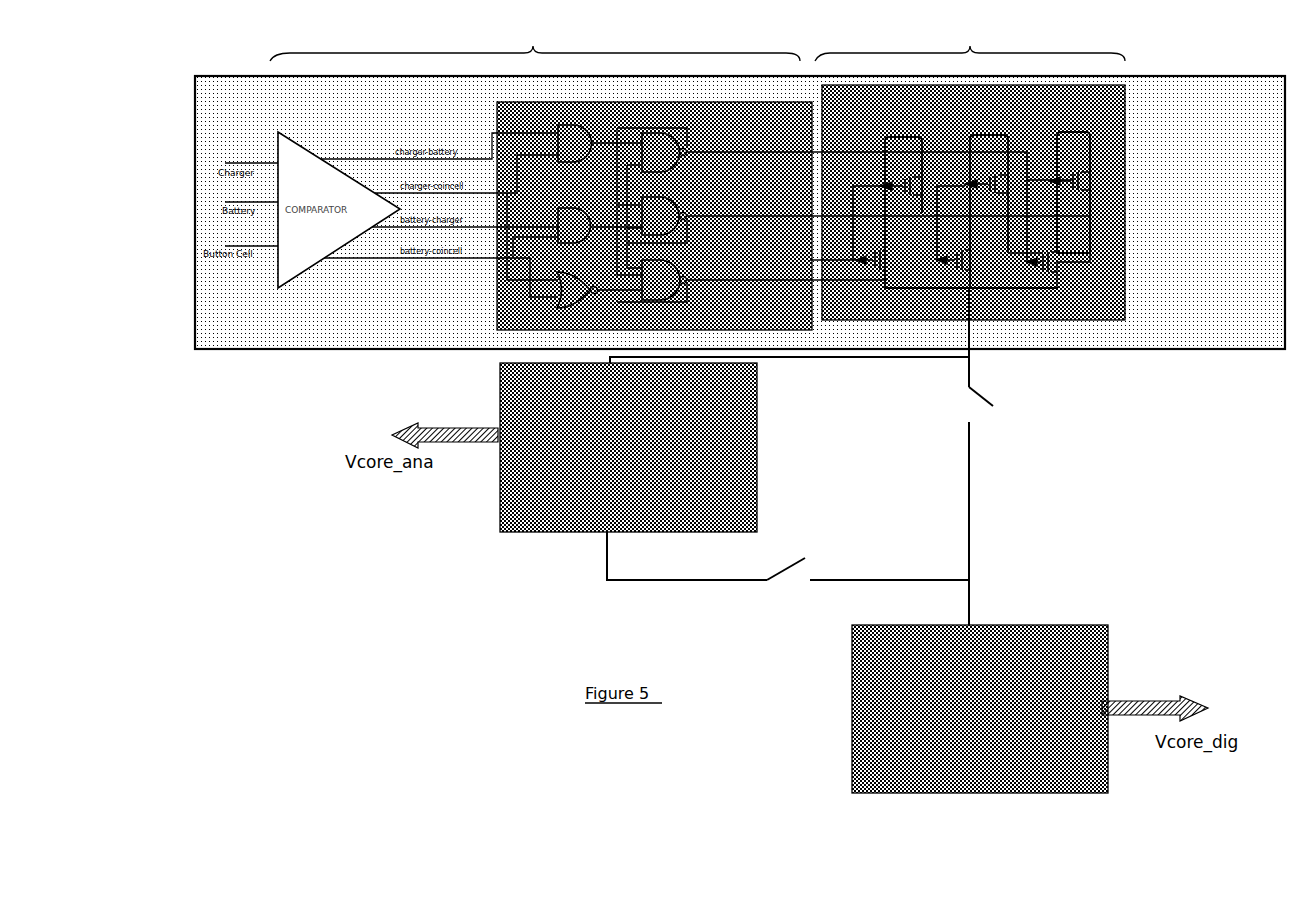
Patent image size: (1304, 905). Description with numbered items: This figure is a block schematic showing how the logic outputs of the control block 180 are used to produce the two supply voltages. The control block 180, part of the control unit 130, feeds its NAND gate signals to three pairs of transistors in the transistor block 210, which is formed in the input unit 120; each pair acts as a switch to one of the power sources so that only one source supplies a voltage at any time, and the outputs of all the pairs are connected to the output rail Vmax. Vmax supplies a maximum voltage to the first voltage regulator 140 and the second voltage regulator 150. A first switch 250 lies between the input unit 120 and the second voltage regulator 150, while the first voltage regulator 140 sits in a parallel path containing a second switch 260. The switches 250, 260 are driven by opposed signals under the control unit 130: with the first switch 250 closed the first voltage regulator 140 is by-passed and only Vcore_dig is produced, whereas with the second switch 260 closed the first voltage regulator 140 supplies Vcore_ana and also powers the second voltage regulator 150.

The input unit 120 is at (970, 163).
The control unit 130 is at (541, 168).
The first voltage regulator 140 is at (628, 447).
The second voltage regulator 150 is at (980, 709).
The control block 180 is at (497, 325).
The transistor block 210 is at (1125, 290).
The first switch 250 is at (988, 418).
The second switch 260 is at (762, 595).